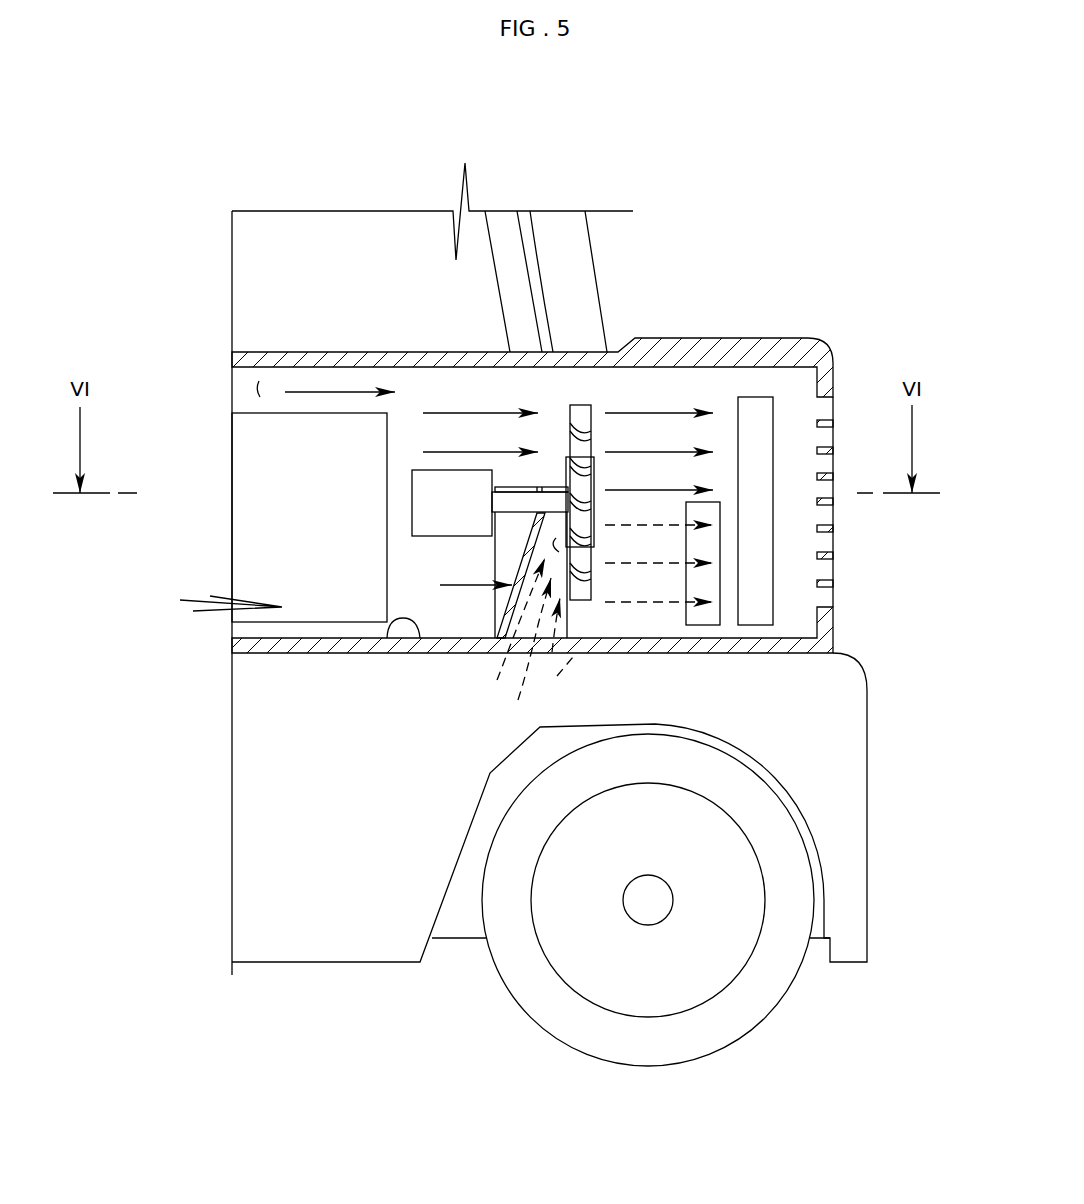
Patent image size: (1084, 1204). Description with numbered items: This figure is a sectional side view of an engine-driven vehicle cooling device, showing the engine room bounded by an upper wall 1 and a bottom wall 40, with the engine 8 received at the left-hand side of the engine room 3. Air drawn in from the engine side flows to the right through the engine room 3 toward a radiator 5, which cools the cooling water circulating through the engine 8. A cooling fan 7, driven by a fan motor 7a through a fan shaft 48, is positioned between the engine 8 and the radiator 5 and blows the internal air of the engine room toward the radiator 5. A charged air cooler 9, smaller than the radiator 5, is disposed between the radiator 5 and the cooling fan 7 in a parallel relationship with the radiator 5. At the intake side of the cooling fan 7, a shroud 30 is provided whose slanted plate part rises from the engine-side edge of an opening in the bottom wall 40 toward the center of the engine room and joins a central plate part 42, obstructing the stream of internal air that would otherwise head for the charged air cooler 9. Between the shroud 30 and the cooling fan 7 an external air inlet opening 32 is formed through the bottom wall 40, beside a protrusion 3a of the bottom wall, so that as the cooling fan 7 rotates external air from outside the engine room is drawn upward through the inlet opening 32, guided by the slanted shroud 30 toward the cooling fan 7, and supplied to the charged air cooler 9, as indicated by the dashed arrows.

The housing upper wall 1 is at (287, 362).
The air passage 3 is at (258, 389).
The protrusion 3a is at (388, 640).
The heat exchanger 5 is at (757, 410).
The cooling fan 7 is at (578, 412).
The fan motor 7a is at (453, 482).
The engine 8 is at (263, 443).
The condenser 9 is at (707, 607).
The duct 30 is at (467, 654).
The inlet 32 is at (559, 552).
The discharge passage 40 is at (440, 585).
The guide 42 is at (533, 551).
The fan shaft 48 is at (490, 513).